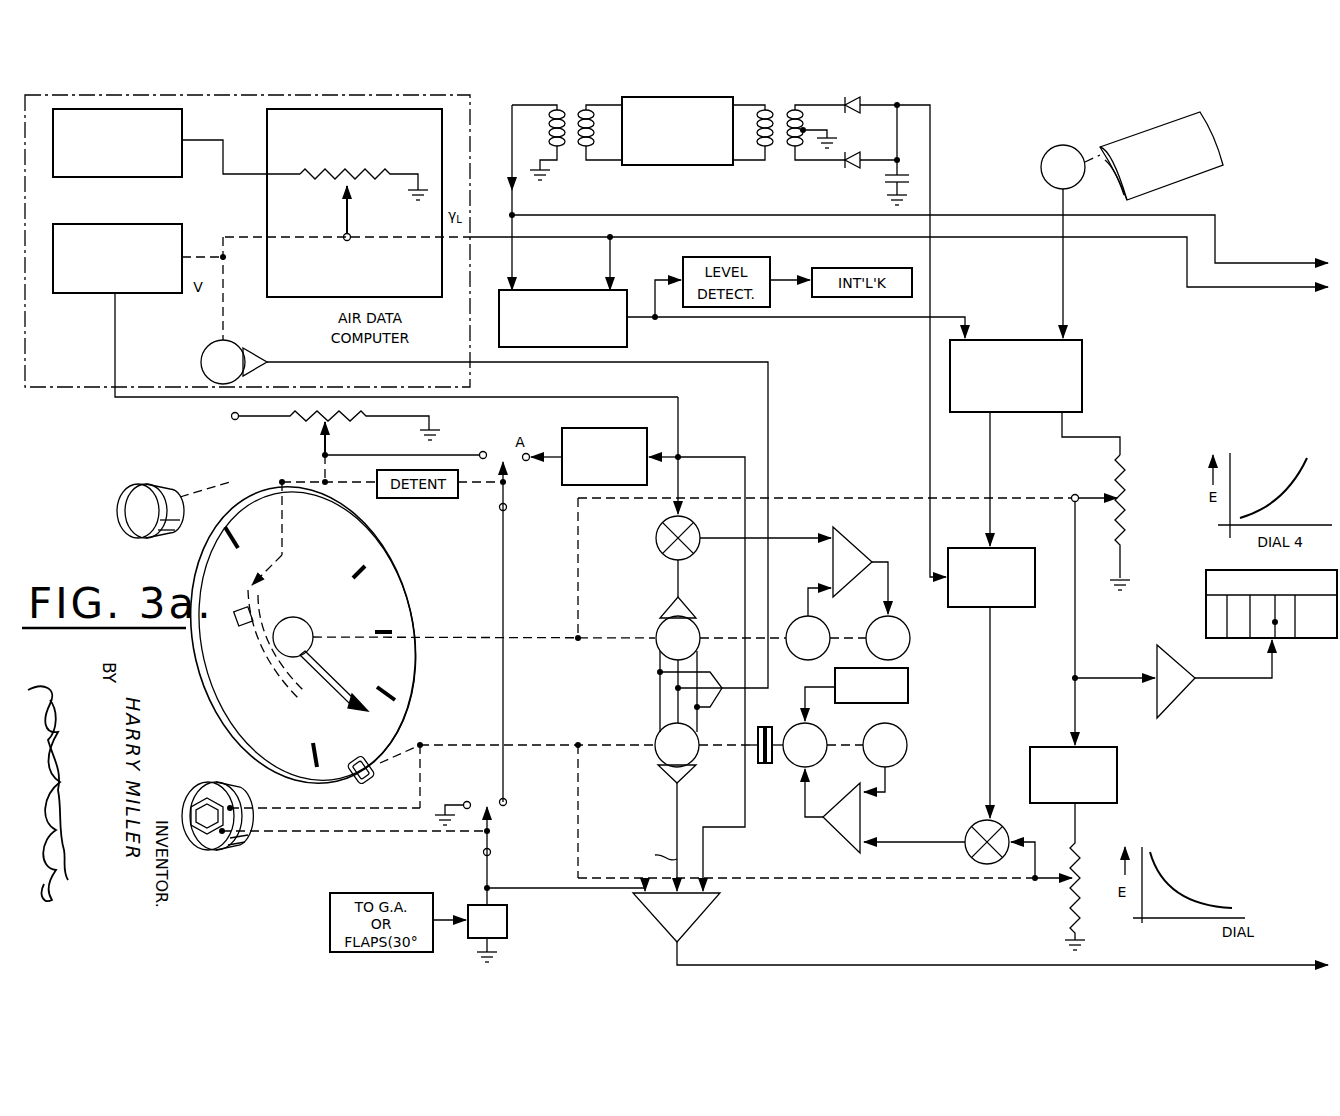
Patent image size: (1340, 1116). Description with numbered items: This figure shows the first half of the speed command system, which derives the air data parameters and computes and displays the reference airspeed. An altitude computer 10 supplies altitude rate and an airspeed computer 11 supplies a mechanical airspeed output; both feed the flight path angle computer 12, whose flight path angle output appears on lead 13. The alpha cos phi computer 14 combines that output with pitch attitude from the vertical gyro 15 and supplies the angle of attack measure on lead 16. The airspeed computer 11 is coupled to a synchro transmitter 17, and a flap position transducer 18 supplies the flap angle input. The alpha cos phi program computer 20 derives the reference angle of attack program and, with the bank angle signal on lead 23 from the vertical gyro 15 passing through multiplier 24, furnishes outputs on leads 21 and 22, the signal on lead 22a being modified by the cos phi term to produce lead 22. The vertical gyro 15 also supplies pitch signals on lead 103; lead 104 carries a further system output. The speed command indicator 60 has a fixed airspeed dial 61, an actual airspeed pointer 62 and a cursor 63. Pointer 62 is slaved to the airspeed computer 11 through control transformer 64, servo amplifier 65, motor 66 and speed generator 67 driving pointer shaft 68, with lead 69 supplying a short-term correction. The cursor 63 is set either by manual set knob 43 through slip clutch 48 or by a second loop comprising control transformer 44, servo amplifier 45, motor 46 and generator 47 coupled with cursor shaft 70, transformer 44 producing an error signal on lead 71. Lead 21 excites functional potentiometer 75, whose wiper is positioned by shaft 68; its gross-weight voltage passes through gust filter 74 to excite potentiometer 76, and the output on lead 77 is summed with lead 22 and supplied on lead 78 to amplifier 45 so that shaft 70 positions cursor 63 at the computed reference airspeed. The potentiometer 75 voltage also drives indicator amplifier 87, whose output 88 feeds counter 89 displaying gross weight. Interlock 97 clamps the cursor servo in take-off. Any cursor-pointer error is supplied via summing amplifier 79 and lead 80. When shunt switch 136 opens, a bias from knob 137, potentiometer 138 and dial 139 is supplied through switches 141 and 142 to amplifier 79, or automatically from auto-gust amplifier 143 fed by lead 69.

The altitude computer 10 is at (117, 177).
The airspeed computer 11 is at (78, 293).
The flight path angle computer 12 is at (282, 297).
The lead 13 is at (495, 240).
The alpha cos phi computer 14 is at (555, 290).
The vertical gyro 15 is at (680, 165).
The lead 16 is at (822, 320).
The synchro transmitter 17 is at (203, 360).
The flap position transducer 18 is at (1045, 155).
The alpha cos phi program computer 20 is at (1012, 340).
The lead 21 is at (1082, 437).
The lead 22 is at (990, 662).
The lead 22a is at (990, 462).
The lead 23 is at (930, 258).
The multiplier 24 is at (1010, 548).
The manual set knob 43 is at (210, 782).
The control transformer 44 is at (657, 760).
The servo amplifier 45 is at (828, 835).
The motor 46 is at (828, 732).
The generator 47 is at (907, 740).
The slip clutch 48 is at (765, 766).
The speed command indicator 60 is at (297, 635).
The airspeed dial 61 is at (195, 580).
The first indicator pointer 62 is at (335, 665).
The second indicator pointer 63 is at (350, 778).
The control transformer 64 is at (660, 626).
The servo amplifier 65 is at (862, 542).
The motor 66 is at (900, 620).
The speed generator 67 is at (800, 614).
The pointer shaft 68 is at (860, 498).
The lead 69 is at (680, 408).
The cursor shaft 70 is at (900, 878).
The lead 71 is at (677, 800).
The gust filter 74 is at (1040, 747).
The functional potentiometer 75 is at (1125, 490).
The potentiometer 76 is at (1068, 900).
The lead 77 is at (1012, 838).
The lead 78 is at (920, 840).
The summing amplifier 79 is at (705, 915).
The lead 80 is at (1210, 965).
The indicator amplifier 87 is at (1182, 672).
The output 88 is at (1280, 672).
The counter 89 is at (1212, 570).
The interlock 97 is at (910, 690).
The lead 103 is at (1220, 232).
The flight path limit output line 104 is at (1202, 290).
The shunt switch 136 is at (507, 922).
The knob 137 is at (150, 480).
The potentiometer 138 is at (314, 432).
The dial 139 is at (242, 647).
The switch 141 is at (490, 500).
The switch 142 is at (510, 824).
The auto-gust amplifier 143 is at (560, 435).